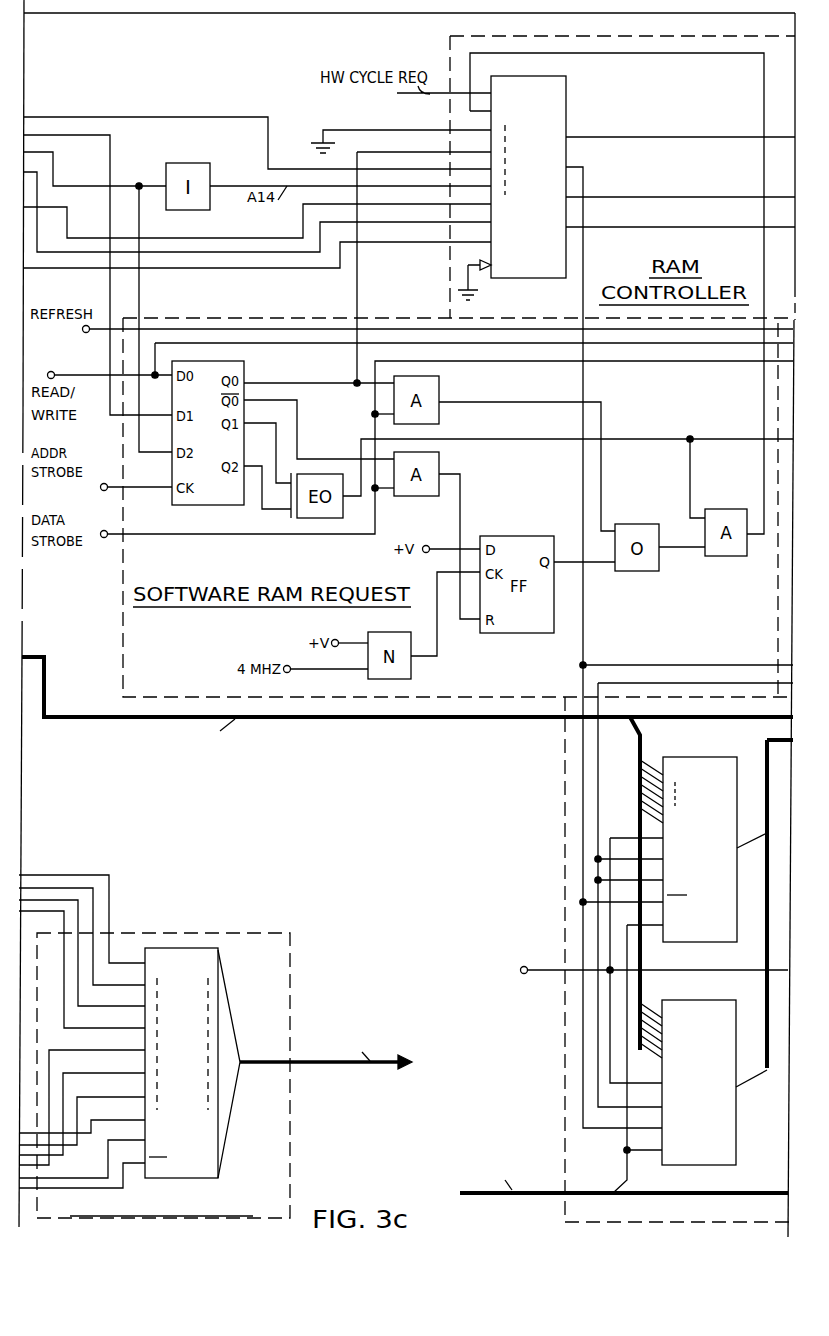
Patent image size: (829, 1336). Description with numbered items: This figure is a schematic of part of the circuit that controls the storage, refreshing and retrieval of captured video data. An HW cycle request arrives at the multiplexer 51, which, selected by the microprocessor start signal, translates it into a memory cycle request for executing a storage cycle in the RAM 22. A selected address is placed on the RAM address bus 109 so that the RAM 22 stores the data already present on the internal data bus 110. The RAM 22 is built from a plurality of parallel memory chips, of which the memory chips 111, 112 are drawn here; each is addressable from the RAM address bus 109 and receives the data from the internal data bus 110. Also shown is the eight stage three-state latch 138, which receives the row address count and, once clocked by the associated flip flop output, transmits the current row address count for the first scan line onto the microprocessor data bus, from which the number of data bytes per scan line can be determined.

The multiplexer 51 is at (568, 80).
The RAM address bus 109 is at (345, 720).
The internal data bus 110 is at (539, 1197).
The memory chip 111 is at (699, 757).
The memory chip 112 is at (701, 1005).
The RAM 22 is at (565, 1064).
The eight stage three-state latch 138 is at (219, 950).